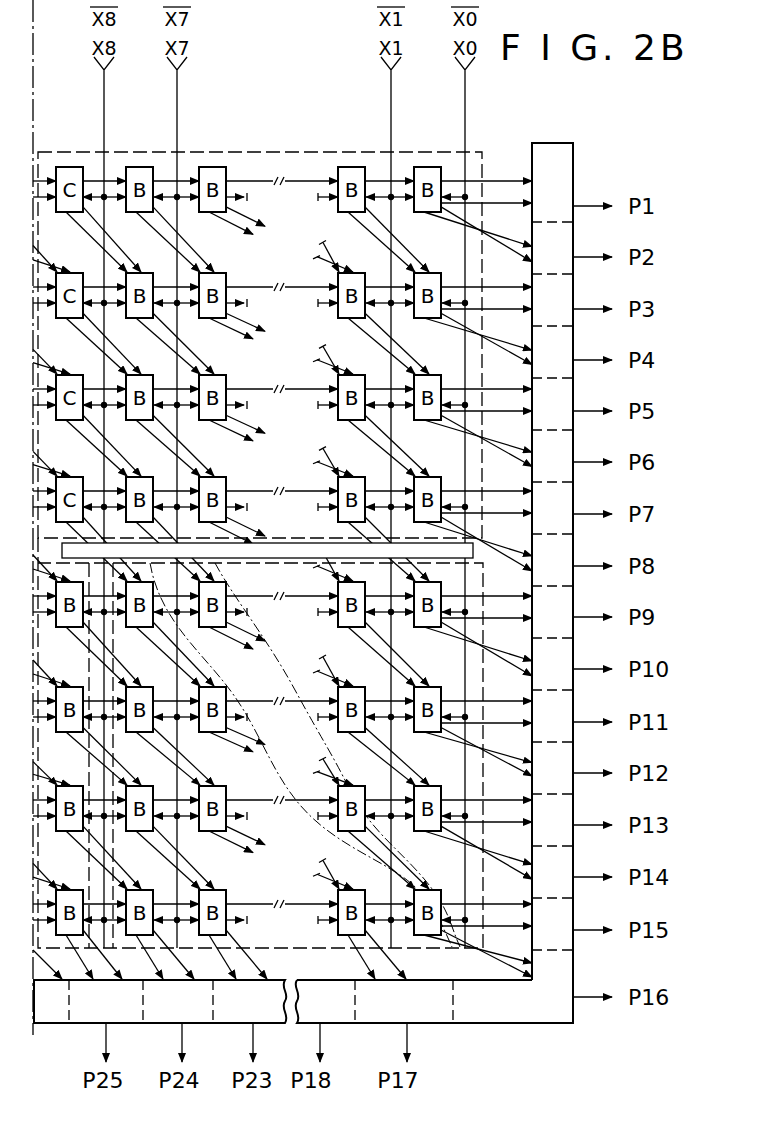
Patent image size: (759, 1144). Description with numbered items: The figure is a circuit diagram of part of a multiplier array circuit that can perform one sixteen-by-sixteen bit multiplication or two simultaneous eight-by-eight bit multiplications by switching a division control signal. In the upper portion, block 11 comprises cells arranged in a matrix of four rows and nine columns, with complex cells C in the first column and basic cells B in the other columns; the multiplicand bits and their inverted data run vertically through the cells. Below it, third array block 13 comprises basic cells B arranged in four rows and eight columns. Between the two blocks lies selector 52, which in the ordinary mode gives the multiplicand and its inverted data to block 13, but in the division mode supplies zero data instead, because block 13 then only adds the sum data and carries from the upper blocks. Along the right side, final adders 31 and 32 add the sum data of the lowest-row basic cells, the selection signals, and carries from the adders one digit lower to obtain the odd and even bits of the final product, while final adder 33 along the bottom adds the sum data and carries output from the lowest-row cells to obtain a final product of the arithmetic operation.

The block 11 is at (309, 129).
The third array block 13 is at (488, 636).
The final adder 31 is at (553, 143).
The final adder 32 is at (557, 843).
The final adder 33 is at (421, 1012).
The selector 52 is at (273, 543).